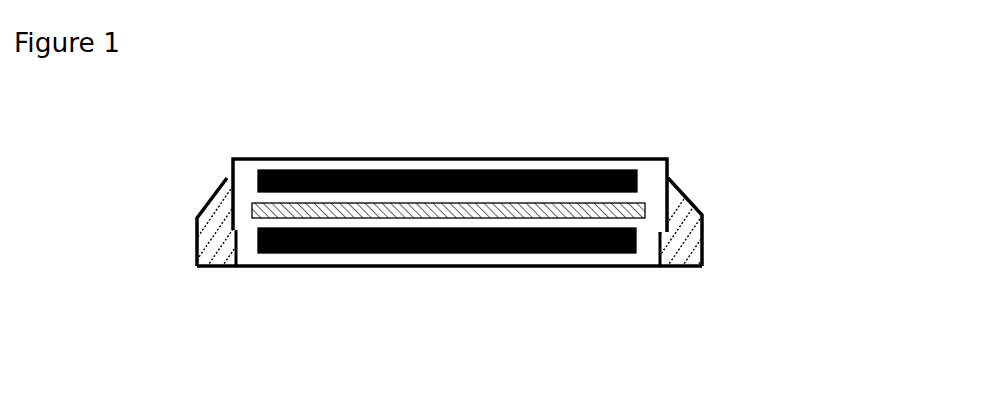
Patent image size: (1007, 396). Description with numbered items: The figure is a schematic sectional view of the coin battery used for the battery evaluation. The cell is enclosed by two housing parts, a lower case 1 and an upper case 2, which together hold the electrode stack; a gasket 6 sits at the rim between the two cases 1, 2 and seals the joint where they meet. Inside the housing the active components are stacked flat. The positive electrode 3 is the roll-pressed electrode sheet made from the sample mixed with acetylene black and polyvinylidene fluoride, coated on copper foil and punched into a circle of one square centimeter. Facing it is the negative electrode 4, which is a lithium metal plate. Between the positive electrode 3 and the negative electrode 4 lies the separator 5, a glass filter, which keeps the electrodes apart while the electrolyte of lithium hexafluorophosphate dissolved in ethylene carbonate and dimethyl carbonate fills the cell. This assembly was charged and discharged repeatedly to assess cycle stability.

The case 1 is at (253, 268).
The case 2 is at (309, 156).
The positive electrode 3 is at (373, 252).
The negative electrode 4 is at (470, 169).
The separator 5 is at (448, 214).
The gasket 6 is at (686, 218).